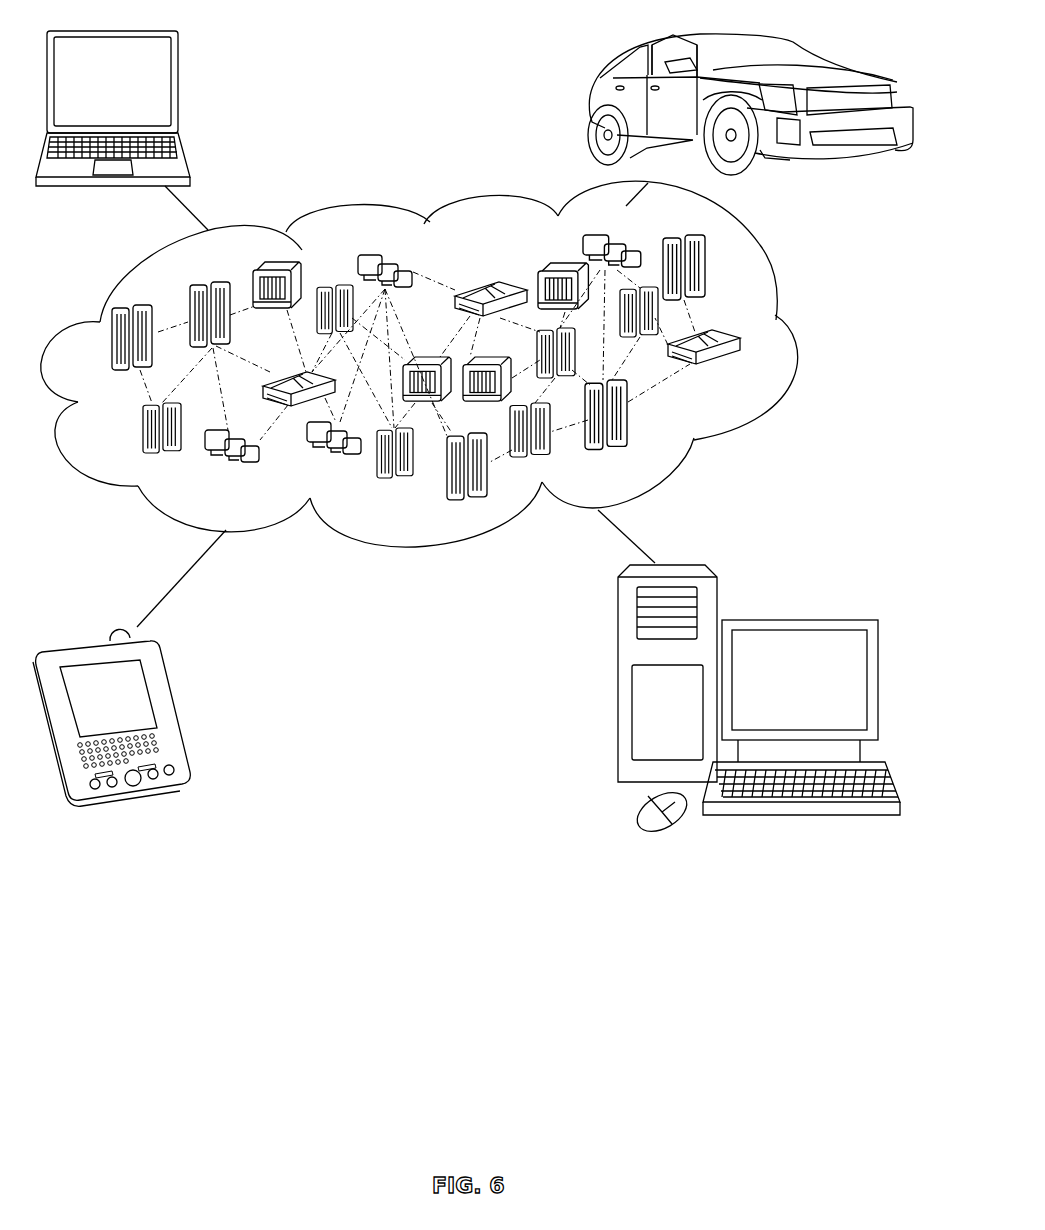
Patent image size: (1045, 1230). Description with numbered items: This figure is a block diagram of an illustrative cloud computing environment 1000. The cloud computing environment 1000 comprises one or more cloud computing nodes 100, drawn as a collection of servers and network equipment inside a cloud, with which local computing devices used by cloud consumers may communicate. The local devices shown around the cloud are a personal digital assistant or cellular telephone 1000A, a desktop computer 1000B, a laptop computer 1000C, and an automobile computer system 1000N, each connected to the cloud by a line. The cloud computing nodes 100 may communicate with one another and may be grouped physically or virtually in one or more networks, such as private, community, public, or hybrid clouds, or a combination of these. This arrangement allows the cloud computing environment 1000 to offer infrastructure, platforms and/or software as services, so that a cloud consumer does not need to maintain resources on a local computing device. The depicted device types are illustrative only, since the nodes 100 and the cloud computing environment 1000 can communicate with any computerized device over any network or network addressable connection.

The laptop computer 1000C is at (180, 90).
The automobile computer system 1000N is at (590, 103).
The cloud computing environment 1000 is at (802, 348).
The cloud computing nodes 100 is at (741, 373).
The personal digital assistant (PDA) or cellular telephone 1000A is at (170, 708).
The desktop computer 1000B is at (797, 617).